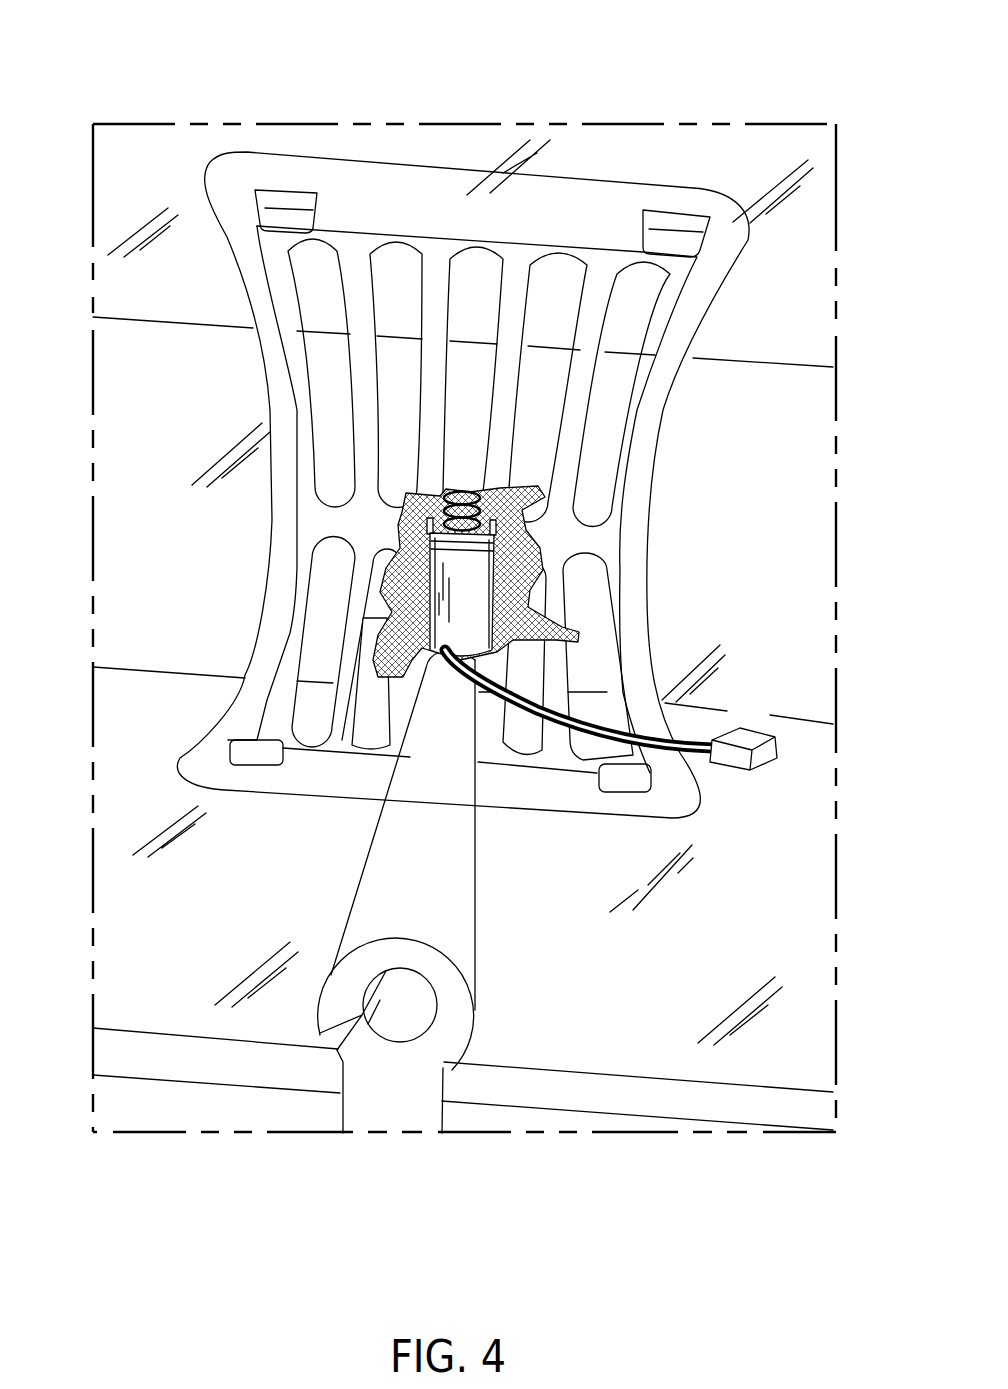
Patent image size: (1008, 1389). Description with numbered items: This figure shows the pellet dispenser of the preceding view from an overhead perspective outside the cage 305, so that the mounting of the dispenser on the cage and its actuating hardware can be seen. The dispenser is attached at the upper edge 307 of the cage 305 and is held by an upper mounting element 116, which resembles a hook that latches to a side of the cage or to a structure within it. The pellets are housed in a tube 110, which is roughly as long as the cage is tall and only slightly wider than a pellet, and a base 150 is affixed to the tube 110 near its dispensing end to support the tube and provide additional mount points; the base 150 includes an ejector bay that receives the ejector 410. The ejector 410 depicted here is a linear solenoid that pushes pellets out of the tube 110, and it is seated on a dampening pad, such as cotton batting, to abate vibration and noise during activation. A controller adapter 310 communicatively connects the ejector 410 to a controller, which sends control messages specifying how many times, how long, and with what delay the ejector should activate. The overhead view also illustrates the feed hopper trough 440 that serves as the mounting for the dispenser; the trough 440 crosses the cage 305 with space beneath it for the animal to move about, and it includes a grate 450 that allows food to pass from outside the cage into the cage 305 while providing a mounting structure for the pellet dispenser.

The cage 305 is at (783, 77).
The feed hopper trough 440 is at (216, 397).
The grate 450 is at (500, 333).
The ejector 410 is at (430, 593).
The base 150 is at (353, 678).
The controller adapter 310 is at (747, 723).
The tube 110 is at (478, 918).
The upper edge 307 is at (597, 1072).
The upper mounting element 116 is at (380, 1105).